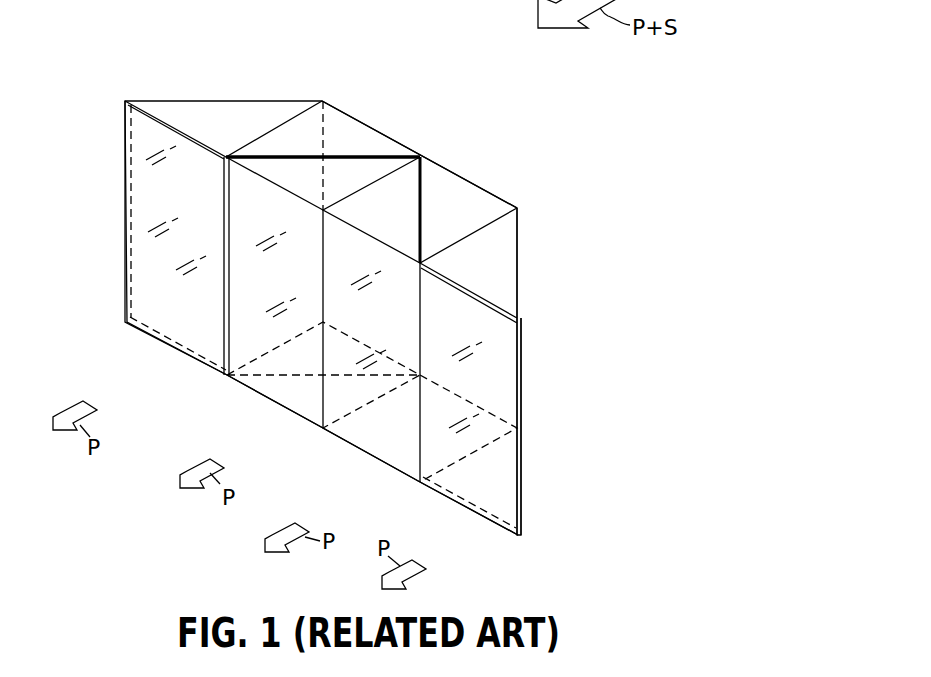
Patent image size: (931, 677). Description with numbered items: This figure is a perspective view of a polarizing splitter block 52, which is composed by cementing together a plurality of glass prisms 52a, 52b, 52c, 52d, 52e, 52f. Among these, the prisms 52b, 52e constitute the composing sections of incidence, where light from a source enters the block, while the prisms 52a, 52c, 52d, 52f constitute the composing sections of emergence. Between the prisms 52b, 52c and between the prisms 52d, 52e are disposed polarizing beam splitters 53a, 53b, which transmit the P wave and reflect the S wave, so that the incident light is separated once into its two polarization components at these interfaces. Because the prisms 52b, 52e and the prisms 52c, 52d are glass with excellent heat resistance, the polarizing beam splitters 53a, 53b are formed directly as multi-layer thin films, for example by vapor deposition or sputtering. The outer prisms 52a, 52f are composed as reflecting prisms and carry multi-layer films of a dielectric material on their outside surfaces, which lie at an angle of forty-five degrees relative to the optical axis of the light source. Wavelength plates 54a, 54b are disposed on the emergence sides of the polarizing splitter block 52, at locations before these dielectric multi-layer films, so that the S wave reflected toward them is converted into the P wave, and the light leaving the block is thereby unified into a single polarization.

The polarizing splitter block 52 is at (611, 405).
The prism 52a is at (227, 125).
The prism 52b is at (348, 136).
The prism 52c is at (298, 395).
The prism 52d is at (372, 433).
The prism 52e is at (483, 200).
The prism 52f is at (507, 265).
The polarizing beam splitter 53a is at (397, 153).
The polarizing beam splitter 53b is at (422, 187).
The wavelength plate 54a is at (177, 320).
The wavelength plate 54b is at (487, 493).